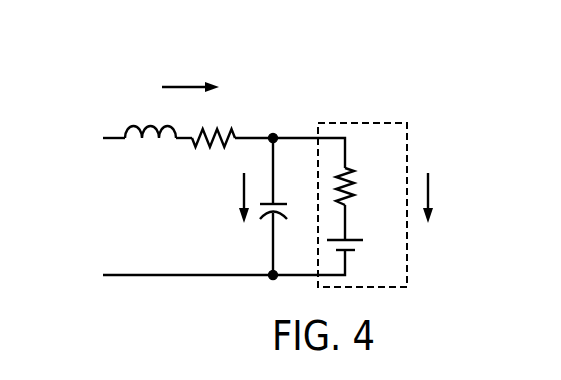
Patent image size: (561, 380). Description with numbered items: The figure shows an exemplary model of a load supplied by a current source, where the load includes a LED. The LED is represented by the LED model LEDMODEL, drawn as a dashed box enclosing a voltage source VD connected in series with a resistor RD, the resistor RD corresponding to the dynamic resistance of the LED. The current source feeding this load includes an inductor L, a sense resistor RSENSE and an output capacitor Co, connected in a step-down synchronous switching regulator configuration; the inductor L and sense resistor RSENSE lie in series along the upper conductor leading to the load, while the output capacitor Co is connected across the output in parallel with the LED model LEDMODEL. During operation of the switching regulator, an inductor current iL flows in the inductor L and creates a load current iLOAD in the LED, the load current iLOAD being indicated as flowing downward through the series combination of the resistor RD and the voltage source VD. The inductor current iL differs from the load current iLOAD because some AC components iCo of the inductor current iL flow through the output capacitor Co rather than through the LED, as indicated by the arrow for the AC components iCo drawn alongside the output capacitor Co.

The inductor L is at (150, 119).
The sense resistor RSENSE is at (209, 124).
The inductor current iL is at (190, 77).
The output capacitor Co is at (286, 206).
The AC components of the inductor current iCo is at (230, 198).
The LED model LEDMODEL is at (360, 194).
The resistor RD is at (366, 188).
The voltage source VD is at (362, 250).
The load current iLOAD is at (455, 198).